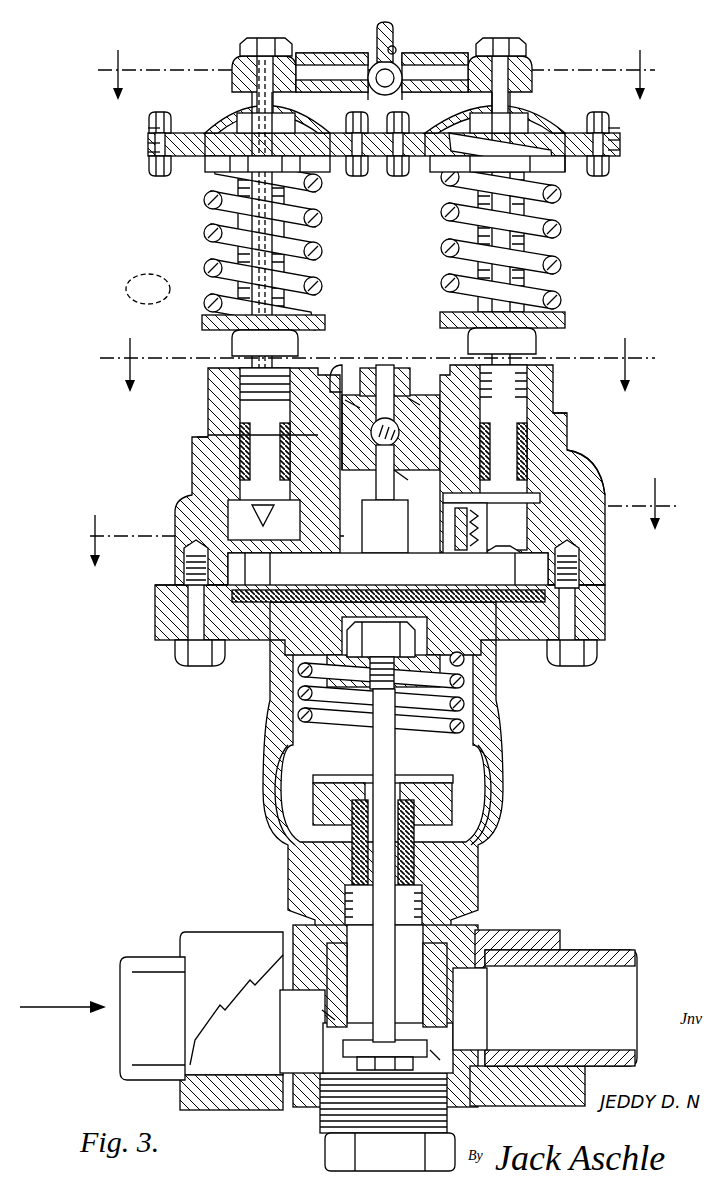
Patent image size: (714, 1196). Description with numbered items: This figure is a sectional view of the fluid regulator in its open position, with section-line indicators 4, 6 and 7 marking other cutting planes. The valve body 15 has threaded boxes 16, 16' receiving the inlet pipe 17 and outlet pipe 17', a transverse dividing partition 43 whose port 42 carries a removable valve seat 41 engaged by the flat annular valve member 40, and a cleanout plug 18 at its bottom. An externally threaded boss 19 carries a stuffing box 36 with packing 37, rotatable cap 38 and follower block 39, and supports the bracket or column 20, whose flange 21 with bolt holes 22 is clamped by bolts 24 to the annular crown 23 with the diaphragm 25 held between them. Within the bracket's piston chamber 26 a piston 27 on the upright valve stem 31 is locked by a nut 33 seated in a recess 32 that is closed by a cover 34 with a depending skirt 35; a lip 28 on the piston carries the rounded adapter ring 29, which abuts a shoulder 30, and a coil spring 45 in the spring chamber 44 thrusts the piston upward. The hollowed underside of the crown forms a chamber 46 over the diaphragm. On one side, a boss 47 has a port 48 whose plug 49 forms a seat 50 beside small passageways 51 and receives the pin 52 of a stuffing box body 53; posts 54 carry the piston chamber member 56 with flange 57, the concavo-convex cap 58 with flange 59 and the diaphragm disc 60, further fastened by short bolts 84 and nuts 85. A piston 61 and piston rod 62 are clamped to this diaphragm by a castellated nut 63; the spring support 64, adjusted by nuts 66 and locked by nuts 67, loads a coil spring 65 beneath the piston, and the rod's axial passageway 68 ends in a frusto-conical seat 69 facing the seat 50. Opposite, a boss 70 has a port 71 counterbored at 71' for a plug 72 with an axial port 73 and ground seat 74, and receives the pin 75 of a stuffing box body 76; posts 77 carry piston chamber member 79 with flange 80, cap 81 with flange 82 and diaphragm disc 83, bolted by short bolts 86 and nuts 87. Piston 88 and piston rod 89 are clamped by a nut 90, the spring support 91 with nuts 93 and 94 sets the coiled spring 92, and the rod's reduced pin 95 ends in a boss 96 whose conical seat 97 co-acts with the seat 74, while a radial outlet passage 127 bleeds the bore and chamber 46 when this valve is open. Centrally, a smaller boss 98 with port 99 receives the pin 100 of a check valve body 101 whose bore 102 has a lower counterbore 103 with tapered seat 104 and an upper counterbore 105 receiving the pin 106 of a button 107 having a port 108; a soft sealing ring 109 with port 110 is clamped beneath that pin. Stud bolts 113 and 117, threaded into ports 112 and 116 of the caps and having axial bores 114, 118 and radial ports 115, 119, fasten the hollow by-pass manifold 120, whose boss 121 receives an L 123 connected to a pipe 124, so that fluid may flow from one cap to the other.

The section line 4- 4 is at (370, 75).
The section line 6- 6 is at (368, 365).
The section line 7- 7 is at (369, 522).
The valve body 15 is at (470, 932).
The internally screw-threaded box 16 is at (173, 1091).
The internally screw-threaded box 16' is at (521, 933).
The inlet pipe 17 is at (152, 1018).
The outlet or discharge pipe 17' is at (561, 1008).
The drain or cleanout plug 18 is at (390, 1152).
The boss 19 is at (478, 892).
The supporting bracket or column 20 is at (263, 786).
The external flange 21 is at (155, 616).
The bolt holes 22 is at (605, 616).
The annular crown or cap 23 is at (184, 562).
The bolts 24 is at (175, 653).
The diaphragm 25 is at (155, 596).
The piston chamber 26 is at (285, 660).
The piston 27 is at (266, 694).
The flange or supporting lip 28 is at (490, 662).
The adapter ring 29 is at (388, 596).
The shoulder 30 is at (270, 655).
The valve stem 31 is at (376, 775).
The sump or recess 32 is at (470, 692).
The nut 33 is at (381, 639).
The plate or cover 34 is at (361, 596).
The skirt 35 is at (409, 596).
The stuffing box 36 is at (414, 841).
The packing 37 is at (352, 841).
The rotatable cap 38 is at (440, 783).
The follower block 39 is at (340, 792).
The valve member 40 is at (343, 1048).
The valve seat 41 is at (340, 1000).
The port 42 is at (437, 995).
The dividing partition 43 is at (322, 1016).
The spring chamber 44 is at (300, 716).
The coil spring 45 is at (482, 716).
The chamber 46 is at (388, 571).
The boss 47 is at (197, 461).
The port 48 is at (228, 512).
The plug 49 is at (280, 578).
The seat 50 is at (257, 574).
The passageways 51 is at (372, 532).
The pin 52 is at (197, 441).
The stuffing box body 53 is at (208, 421).
The supporting posts 54 is at (250, 258).
The piston chamber member 56 is at (205, 172).
The flange 57 is at (148, 154).
The cap 58 is at (216, 118).
The flange 59 is at (148, 129).
The diaphragm disc 60 is at (148, 143).
The piston 61 is at (322, 190).
The piston rod 62 is at (312, 238).
The castellated nut 63 is at (266, 125).
The spring support 64 is at (205, 323).
The coil spring 65 is at (204, 234).
The nuts 66 is at (232, 345).
The nuts 67 is at (320, 272).
The axial passageway 68 is at (240, 290).
The frusto-conical seat 69 is at (252, 505).
The boss 70 is at (590, 474).
The port 71 is at (539, 457).
The counterbore 71' is at (612, 555).
The plug 72 is at (452, 532).
The port 73 is at (460, 557).
The ground seat 74 is at (512, 560).
The pin 75 is at (568, 452).
The stuffing box body 76 is at (553, 424).
The supporting posts 77 is at (548, 208).
The piston chamber member 79 is at (568, 172).
The flange 80 is at (620, 150).
The cap 81 is at (548, 114).
The flange 82 is at (620, 128).
The diaphragm disc 83 is at (620, 140).
The short bolts 84 is at (160, 112).
The nuts 85 is at (158, 176).
The short bolts 86 is at (398, 112).
The nuts 87 is at (400, 176).
The piston 88 is at (497, 165).
The piston rod 89 is at (489, 233).
The nut 90 is at (499, 123).
The spring support or web 91 is at (562, 318).
The coiled spring 92 is at (561, 266).
The nuts 93 is at (538, 343).
The nuts 94 is at (453, 300).
The pin 95 is at (416, 573).
The boss 96 is at (485, 578).
The conical seat 97 is at (463, 578).
The boss 98 is at (410, 472).
The bore or port 99 is at (385, 526).
The pin 100 is at (366, 470).
The leak or check valve body 101 is at (408, 394).
The axial bore 102 is at (384, 441).
The counterbore 103 is at (392, 539).
The ground tapered seat 104 is at (425, 426).
The counterbore 105 is at (330, 372).
The pin 106 is at (376, 375).
The cap or button 107 is at (398, 380).
The port 108 is at (384, 365).
The packing or sealing ring 109 is at (346, 405).
The port 110 is at (420, 406).
The port 112 is at (296, 99).
The stud bolt 113 is at (284, 38).
The axial bore or passageway 114 is at (256, 80).
The radial ports 115 is at (284, 78).
The port 116 is at (520, 106).
The stud bolt 117 is at (505, 38).
The axial bore or passageway 118 is at (492, 99).
The radial ports 119 is at (475, 78).
The by-pass manifold 120 is at (326, 56).
The boss 121 is at (362, 102).
The L 123 is at (396, 52).
The pipe 124 is at (384, 40).
The outlet port or passage 127 is at (605, 500).